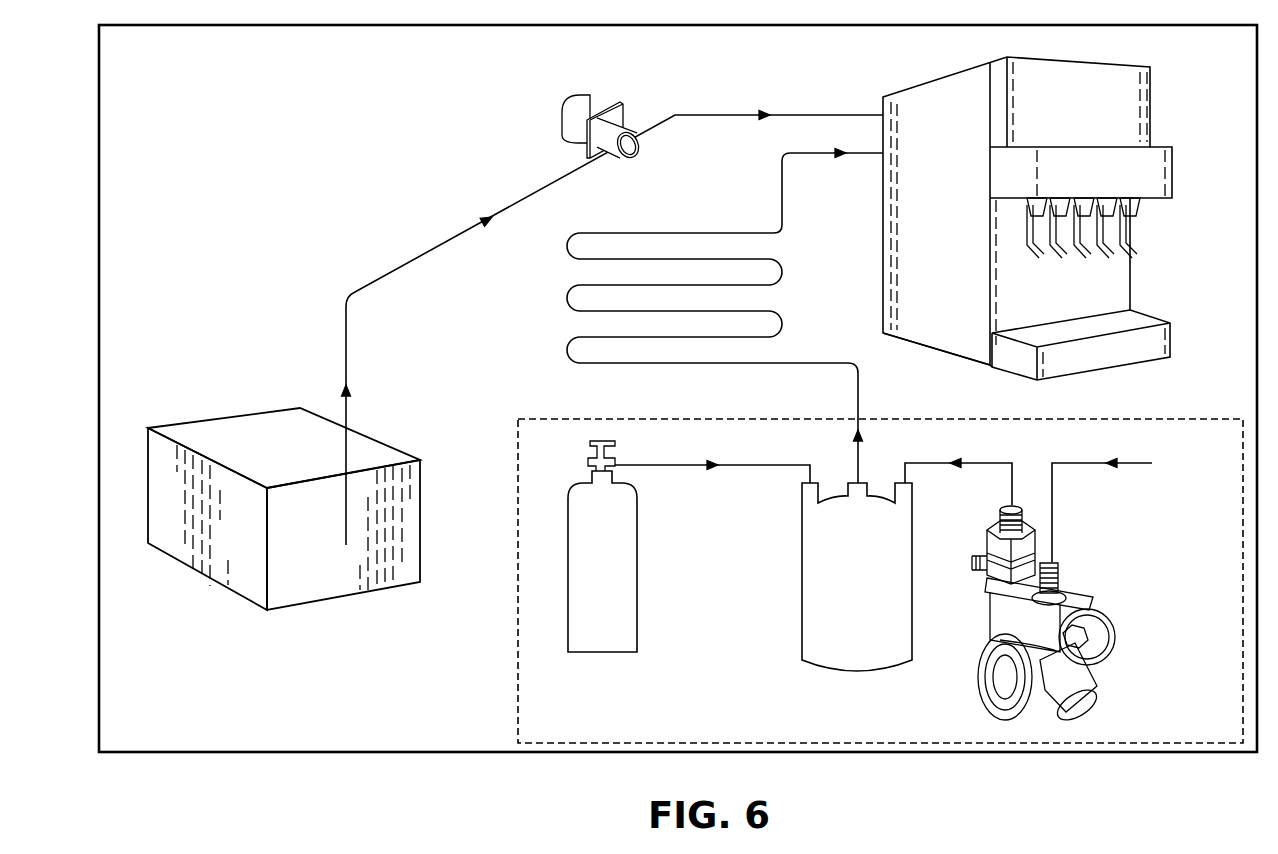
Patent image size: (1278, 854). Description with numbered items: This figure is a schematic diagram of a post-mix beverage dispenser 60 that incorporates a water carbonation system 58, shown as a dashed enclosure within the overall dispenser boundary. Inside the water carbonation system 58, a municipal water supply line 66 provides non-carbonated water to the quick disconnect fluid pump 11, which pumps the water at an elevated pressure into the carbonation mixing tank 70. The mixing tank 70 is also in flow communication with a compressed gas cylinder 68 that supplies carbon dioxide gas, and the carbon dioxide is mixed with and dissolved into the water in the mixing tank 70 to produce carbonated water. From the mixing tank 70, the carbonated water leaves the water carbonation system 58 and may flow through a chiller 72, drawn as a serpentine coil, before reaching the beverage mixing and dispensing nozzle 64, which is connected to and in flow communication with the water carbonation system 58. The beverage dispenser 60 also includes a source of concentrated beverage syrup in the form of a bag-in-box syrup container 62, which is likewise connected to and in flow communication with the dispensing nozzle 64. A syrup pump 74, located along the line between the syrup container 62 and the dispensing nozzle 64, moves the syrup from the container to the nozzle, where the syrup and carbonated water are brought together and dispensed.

The quick disconnect fluid pump 11 is at (1125, 680).
The water carbonation system 58 is at (505, 638).
The post-mix beverage dispenser 60 is at (338, 756).
The bag-in-box syrup container 62 is at (317, 562).
The beverage mixing and dispensing nozzle 64 is at (1162, 262).
The municipal water supply line 66 is at (1207, 501).
The compressed gas cylinder 68 is at (614, 574).
The carbonation mixing tank 70 is at (843, 592).
The chiller 72 is at (555, 297).
The syrup pump 74 is at (540, 124).